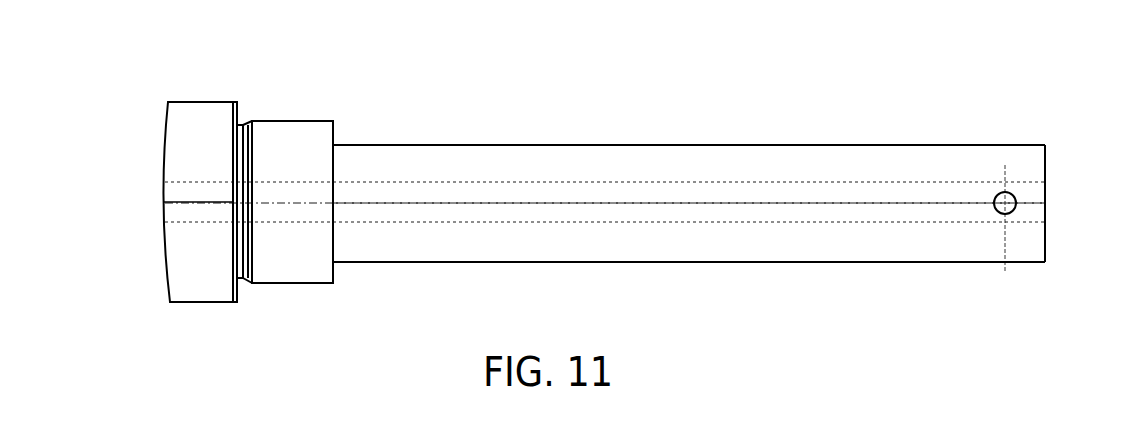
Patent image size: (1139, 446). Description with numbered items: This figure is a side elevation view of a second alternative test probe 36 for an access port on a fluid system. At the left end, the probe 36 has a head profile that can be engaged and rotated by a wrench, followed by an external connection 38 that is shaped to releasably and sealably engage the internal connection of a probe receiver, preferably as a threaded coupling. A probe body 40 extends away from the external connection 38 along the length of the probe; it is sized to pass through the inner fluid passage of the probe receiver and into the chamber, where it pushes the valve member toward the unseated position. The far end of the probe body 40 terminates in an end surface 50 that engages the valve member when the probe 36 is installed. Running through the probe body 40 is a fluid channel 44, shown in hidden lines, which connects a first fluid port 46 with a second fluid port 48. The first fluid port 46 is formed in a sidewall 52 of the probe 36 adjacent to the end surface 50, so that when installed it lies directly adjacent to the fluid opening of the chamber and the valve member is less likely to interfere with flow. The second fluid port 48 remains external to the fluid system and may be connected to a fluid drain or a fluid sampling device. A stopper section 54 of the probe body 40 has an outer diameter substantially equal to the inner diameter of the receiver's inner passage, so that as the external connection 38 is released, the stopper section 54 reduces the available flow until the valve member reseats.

The probe 36 is at (138, 286).
The external connection 38 is at (298, 270).
The probe body 40 is at (937, 238).
The fluid channel 44 is at (728, 193).
The first fluid port 46 is at (1003, 203).
The second fluid port 48 is at (170, 202).
The end surface 50 is at (1038, 193).
The sidewall 52 is at (675, 158).
The stopper section 54 is at (782, 250).